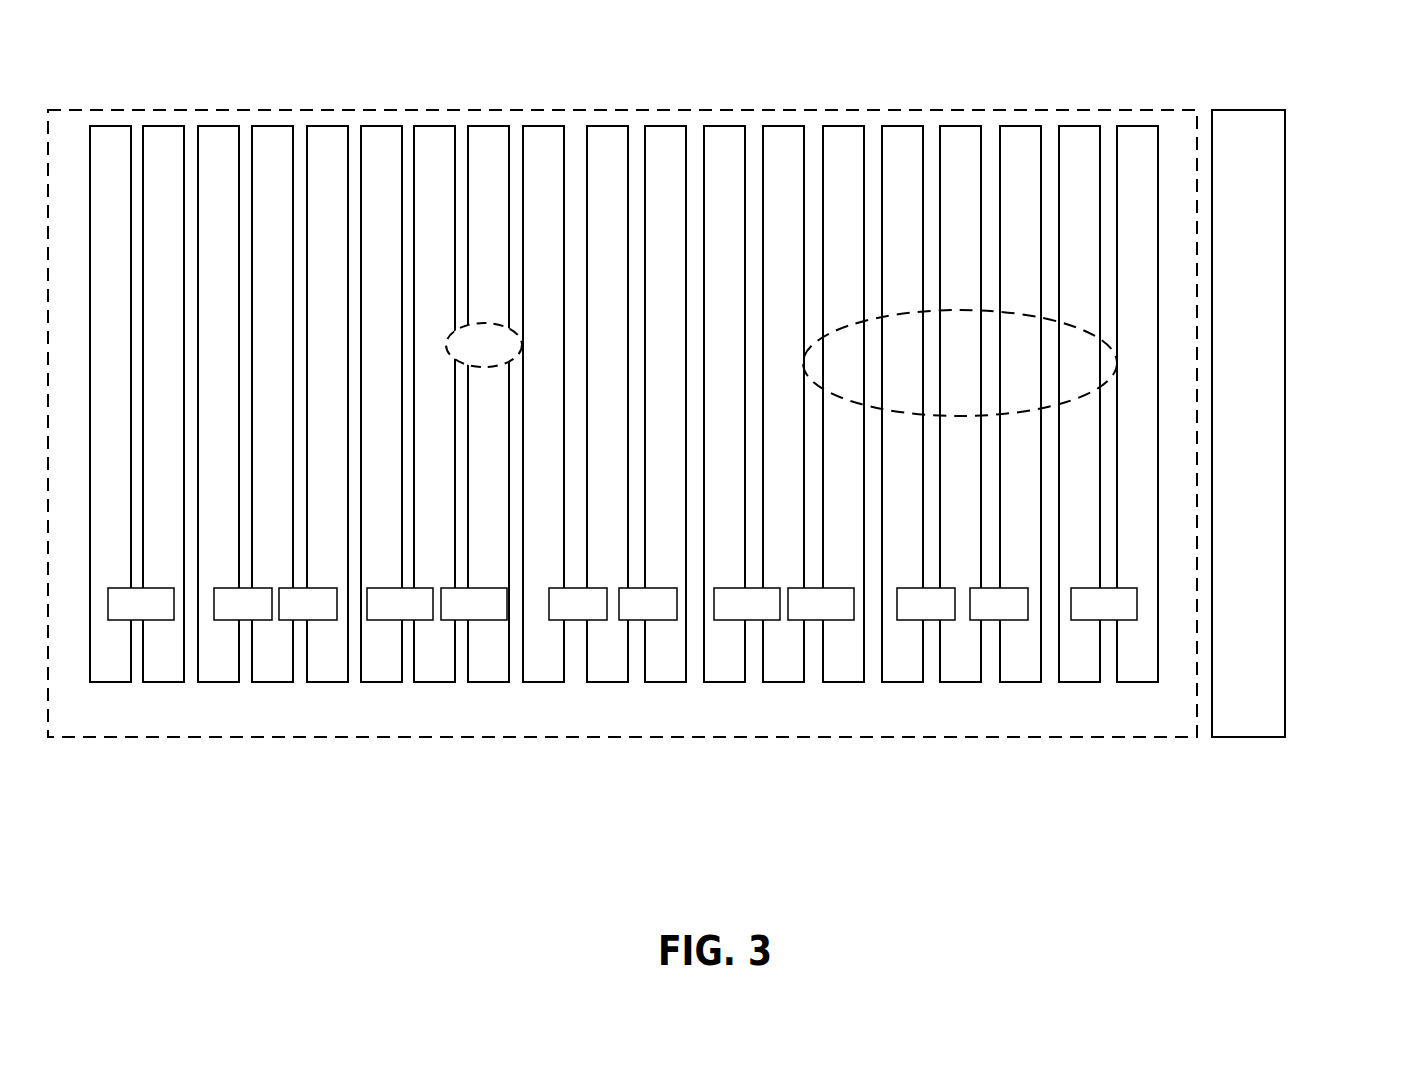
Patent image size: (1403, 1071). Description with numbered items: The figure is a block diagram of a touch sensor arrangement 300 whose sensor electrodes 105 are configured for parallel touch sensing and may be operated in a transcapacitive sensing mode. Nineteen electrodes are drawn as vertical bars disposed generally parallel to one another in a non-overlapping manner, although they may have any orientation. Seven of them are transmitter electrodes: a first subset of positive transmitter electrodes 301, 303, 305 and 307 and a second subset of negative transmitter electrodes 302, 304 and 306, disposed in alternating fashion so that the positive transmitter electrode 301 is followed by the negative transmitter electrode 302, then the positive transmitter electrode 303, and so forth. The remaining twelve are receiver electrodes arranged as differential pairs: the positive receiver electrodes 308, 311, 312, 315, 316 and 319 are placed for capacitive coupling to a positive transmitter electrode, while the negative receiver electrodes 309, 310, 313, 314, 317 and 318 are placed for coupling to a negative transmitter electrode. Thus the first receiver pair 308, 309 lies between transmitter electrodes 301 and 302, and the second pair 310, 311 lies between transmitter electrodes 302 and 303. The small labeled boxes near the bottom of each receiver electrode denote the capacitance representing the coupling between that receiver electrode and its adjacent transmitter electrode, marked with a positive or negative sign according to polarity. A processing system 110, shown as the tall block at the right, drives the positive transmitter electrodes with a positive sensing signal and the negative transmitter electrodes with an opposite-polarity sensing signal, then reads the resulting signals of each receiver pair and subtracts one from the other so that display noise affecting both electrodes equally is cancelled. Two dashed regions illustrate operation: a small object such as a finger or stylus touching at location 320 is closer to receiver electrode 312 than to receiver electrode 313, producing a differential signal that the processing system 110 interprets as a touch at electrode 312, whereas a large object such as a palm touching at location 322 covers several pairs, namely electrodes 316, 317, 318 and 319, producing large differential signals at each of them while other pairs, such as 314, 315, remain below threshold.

The sensor electrodes 105 is at (1115, 110).
The processing system 110 is at (1285, 365).
The sensor electrode arrangement 300 is at (1203, 881).
The positive transmitter electrode 301 is at (107, 682).
The negative transmitter electrode 302 is at (269, 682).
The positive transmitter electrode 303 is at (431, 682).
The negative transmitter electrode 304 is at (604, 682).
The positive transmitter electrode 305 is at (780, 682).
The negative transmitter electrode 306 is at (957, 682).
The positive transmitter electrode 307 is at (1134, 682).
The positive receiver electrode 308 is at (167, 126).
The negative receiver electrode 309 is at (222, 126).
The negative receiver electrode 310 is at (330, 126).
The positive receiver electrode 311 is at (384, 126).
The positive receiver electrode 312 is at (491, 126).
The negative receiver electrode 313 is at (546, 126).
The negative receiver electrode 314 is at (669, 126).
The positive receiver electrode 315 is at (725, 126).
The positive receiver electrode 316 is at (846, 126).
The negative receiver electrode 317 is at (900, 126).
The negative receiver electrode 318 is at (1024, 126).
The positive receiver electrode 319 is at (1080, 126).
The touch location of small object 320 is at (484, 345).
The touch location of large object 322 is at (960, 363).